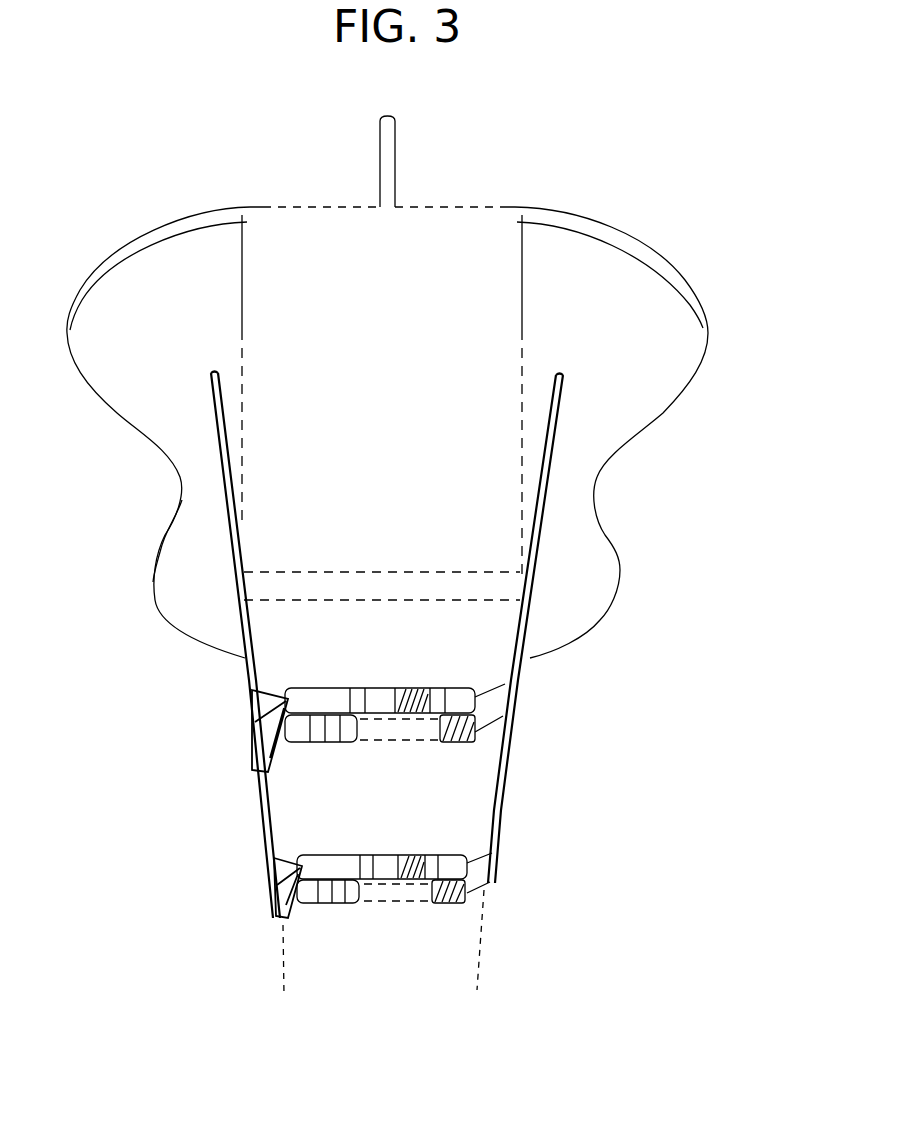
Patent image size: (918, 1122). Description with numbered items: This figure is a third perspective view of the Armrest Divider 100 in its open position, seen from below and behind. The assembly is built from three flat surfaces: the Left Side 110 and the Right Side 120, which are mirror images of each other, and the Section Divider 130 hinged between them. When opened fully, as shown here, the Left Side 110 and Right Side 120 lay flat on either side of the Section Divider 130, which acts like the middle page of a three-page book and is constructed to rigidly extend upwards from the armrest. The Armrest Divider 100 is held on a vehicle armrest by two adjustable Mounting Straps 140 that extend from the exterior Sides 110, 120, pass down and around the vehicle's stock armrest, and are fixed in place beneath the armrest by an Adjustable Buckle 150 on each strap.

The Armrest Divider 100 is at (401, 579).
The Left Side 110 is at (676, 420).
The Right Side 120 is at (156, 204).
The Section Divider 130 is at (372, 142).
The Mounting Straps 140 is at (243, 703).
The Adjustable Buckle 150 is at (445, 745).